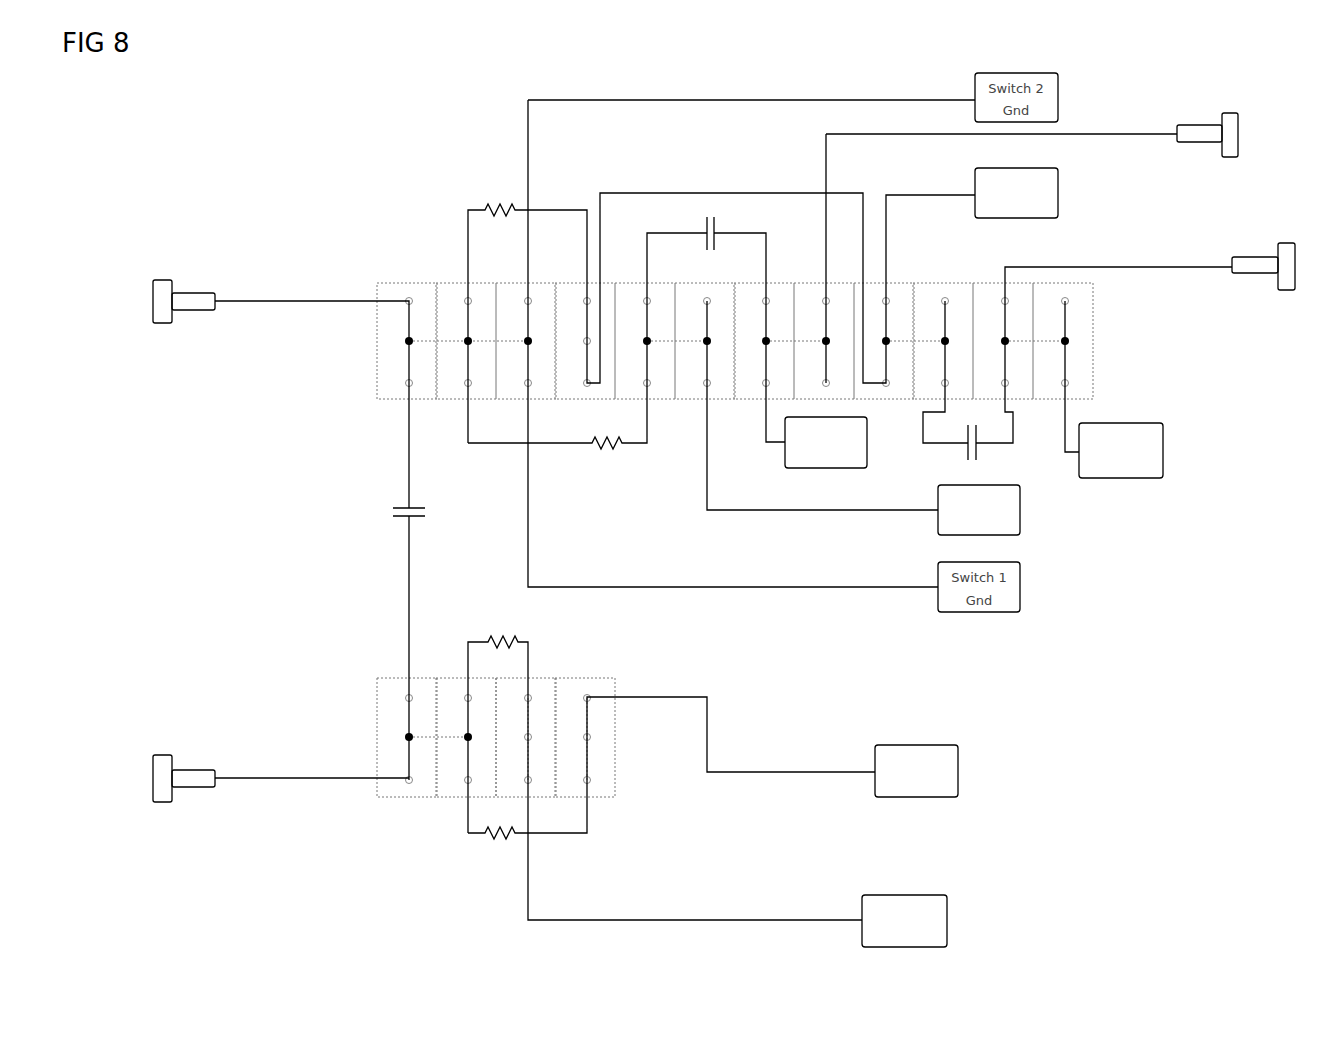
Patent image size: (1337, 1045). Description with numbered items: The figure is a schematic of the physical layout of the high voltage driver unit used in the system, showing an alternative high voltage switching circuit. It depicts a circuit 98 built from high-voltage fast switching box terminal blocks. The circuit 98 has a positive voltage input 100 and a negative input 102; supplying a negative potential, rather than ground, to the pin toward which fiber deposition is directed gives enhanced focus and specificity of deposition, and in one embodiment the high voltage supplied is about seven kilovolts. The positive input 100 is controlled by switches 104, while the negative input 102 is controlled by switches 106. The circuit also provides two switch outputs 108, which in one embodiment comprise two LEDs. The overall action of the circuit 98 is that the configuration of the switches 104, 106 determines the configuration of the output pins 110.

The circuit 98 is at (295, 142).
The positive voltage input 100 is at (153, 778).
The negative input 102 is at (153, 298).
The switches 104 is at (948, 920).
The switches 106 is at (1059, 217).
The switch outputs 108 is at (802, 455).
The output pins 110 is at (1282, 272).